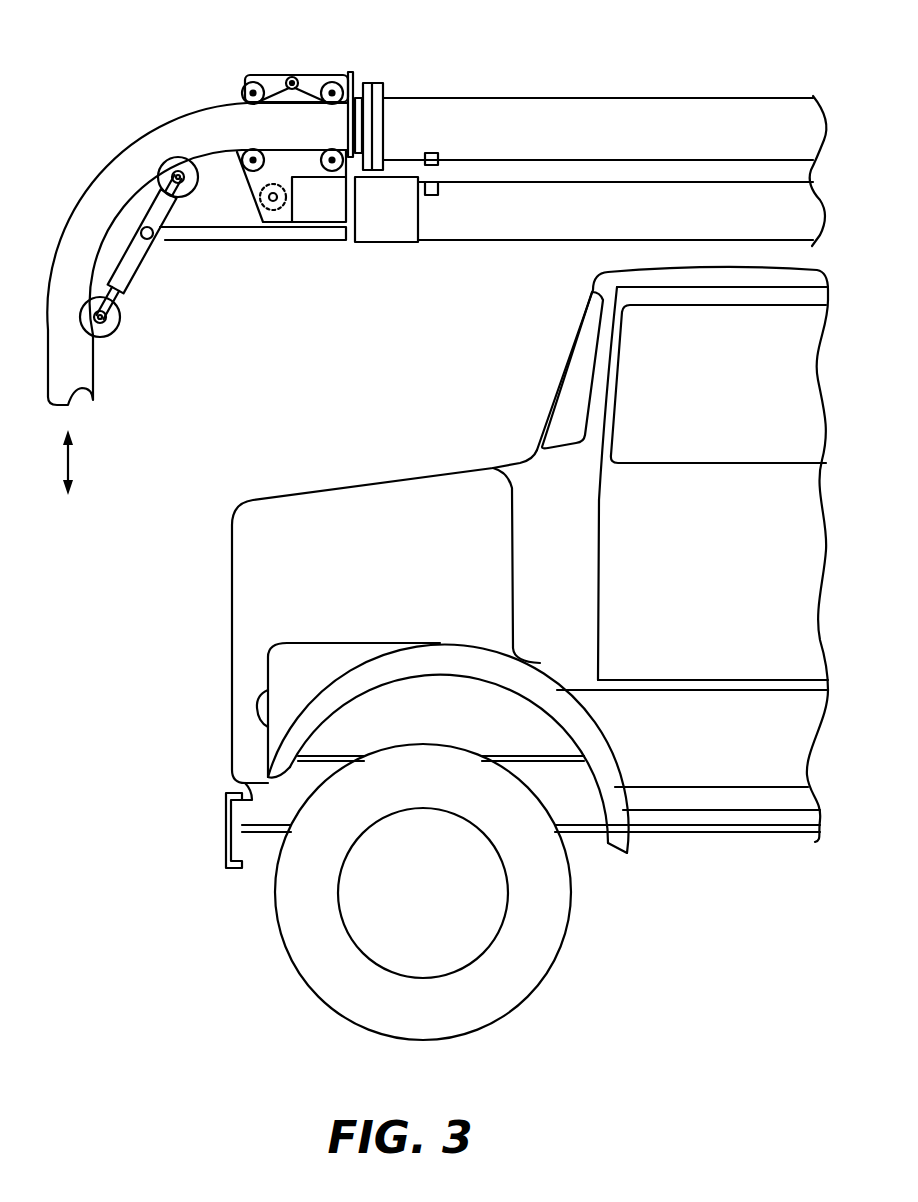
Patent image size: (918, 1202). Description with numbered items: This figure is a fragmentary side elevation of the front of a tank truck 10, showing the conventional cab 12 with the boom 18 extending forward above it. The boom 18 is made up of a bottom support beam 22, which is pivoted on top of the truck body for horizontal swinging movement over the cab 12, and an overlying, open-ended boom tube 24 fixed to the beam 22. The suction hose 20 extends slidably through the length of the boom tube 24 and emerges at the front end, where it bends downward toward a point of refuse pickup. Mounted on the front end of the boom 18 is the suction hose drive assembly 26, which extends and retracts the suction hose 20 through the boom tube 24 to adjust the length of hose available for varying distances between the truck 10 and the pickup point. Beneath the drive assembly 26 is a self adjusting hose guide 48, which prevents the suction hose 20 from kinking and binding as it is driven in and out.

The tank truck 10 is at (726, 856).
The cab 12 is at (699, 403).
The boom 18 is at (592, 72).
The suction hose 20 is at (130, 184).
The bottom support beam 22 is at (579, 226).
The boom tube 24 is at (579, 145).
The suction hose drive assembly 26 is at (297, 60).
The self adjusting hose guide 48 is at (139, 276).